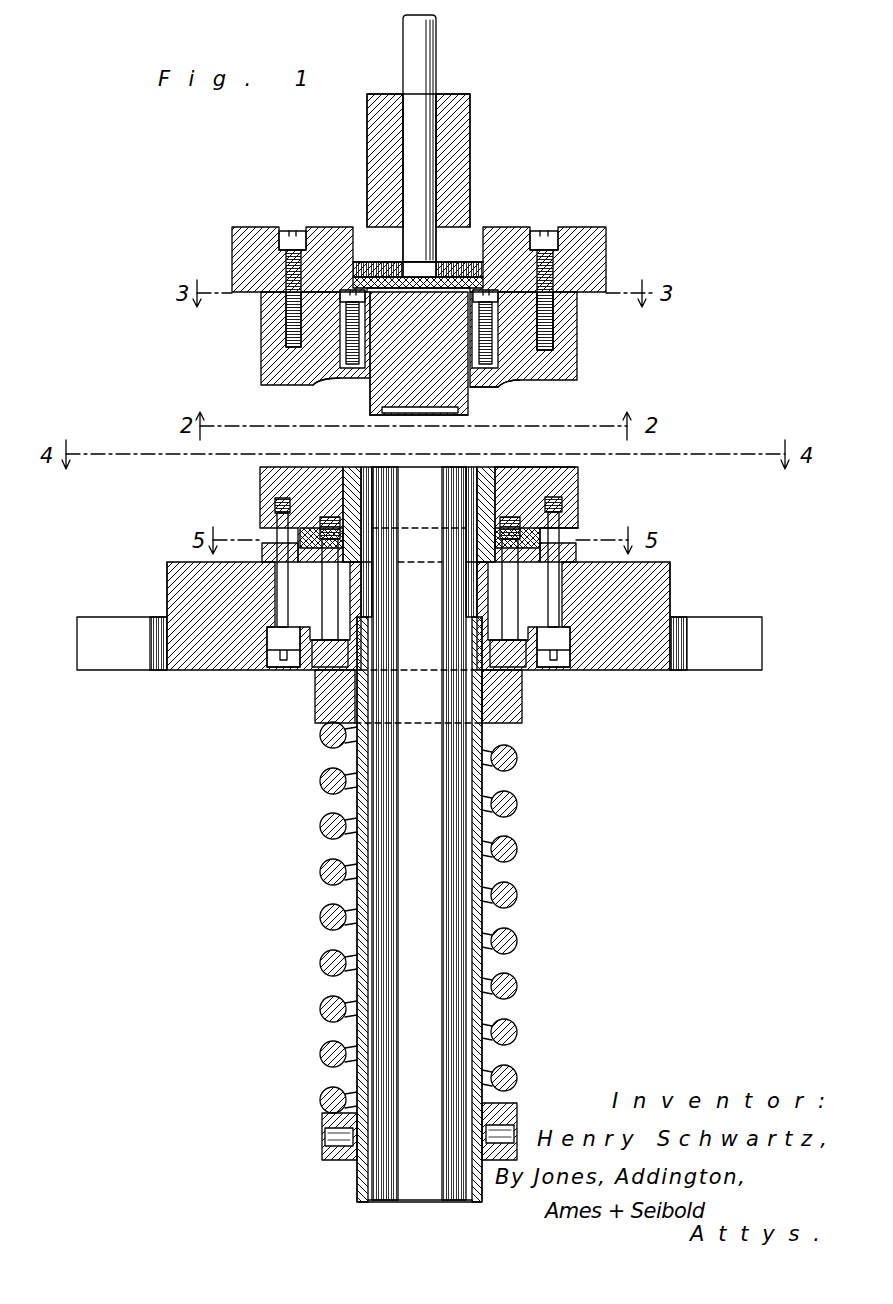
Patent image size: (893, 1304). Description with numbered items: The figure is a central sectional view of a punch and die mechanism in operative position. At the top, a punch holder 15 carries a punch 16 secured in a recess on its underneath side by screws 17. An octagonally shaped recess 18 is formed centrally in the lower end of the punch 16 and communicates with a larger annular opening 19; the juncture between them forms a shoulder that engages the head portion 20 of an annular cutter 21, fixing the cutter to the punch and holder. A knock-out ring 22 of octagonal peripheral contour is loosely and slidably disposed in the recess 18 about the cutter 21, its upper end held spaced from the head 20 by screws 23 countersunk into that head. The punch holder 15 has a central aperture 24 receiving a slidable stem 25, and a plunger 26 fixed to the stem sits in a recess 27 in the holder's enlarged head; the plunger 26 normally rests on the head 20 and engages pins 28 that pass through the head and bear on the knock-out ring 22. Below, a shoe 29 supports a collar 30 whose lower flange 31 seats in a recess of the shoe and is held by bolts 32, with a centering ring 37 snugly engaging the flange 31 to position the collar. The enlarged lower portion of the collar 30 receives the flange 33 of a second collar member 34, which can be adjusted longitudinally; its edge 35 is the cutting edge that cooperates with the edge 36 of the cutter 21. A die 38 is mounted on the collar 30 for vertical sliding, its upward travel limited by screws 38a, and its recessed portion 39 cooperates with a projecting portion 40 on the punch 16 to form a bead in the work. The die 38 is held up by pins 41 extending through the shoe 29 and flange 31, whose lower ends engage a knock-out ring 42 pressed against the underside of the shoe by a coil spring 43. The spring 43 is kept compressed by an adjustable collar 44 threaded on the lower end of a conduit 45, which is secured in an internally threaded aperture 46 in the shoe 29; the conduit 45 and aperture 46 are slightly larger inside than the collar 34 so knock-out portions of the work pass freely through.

The punch holder 15 is at (472, 152).
The punch 16 is at (262, 318).
The screws 17 is at (290, 232).
The octagonally shaped recess 18 is at (480, 383).
The annular opening 19 is at (567, 315).
The head portion 20 is at (546, 228).
The cutter 21 is at (368, 392).
The knock-out ring 22 is at (322, 382).
The screws 23 is at (352, 323).
The central aperture 24 is at (401, 128).
The stem 25 is at (424, 58).
The plunger 26 is at (367, 262).
The recess 27 is at (472, 225).
The pins 28 is at (497, 290).
The shoe 29 is at (652, 587).
The collar 30 is at (498, 490).
The flange 31 is at (540, 545).
The bolts 32 is at (352, 550).
The flange 33 is at (372, 583).
The second collar member 34 is at (372, 495).
The cutting edge 35 is at (452, 447).
The edge 36 is at (372, 417).
The centering ring 37 is at (262, 547).
The die 38 is at (578, 500).
The screws 38a is at (282, 612).
The recessed portion 39 is at (528, 448).
The projecting portion 40 is at (495, 385).
The pins 41 is at (465, 520).
The knock-out ring 42 is at (317, 703).
The coil spring 43 is at (505, 855).
The adjustable collar 44 is at (334, 1162).
The conduit 45 is at (485, 973).
The internally threaded aperture 46 is at (468, 606).